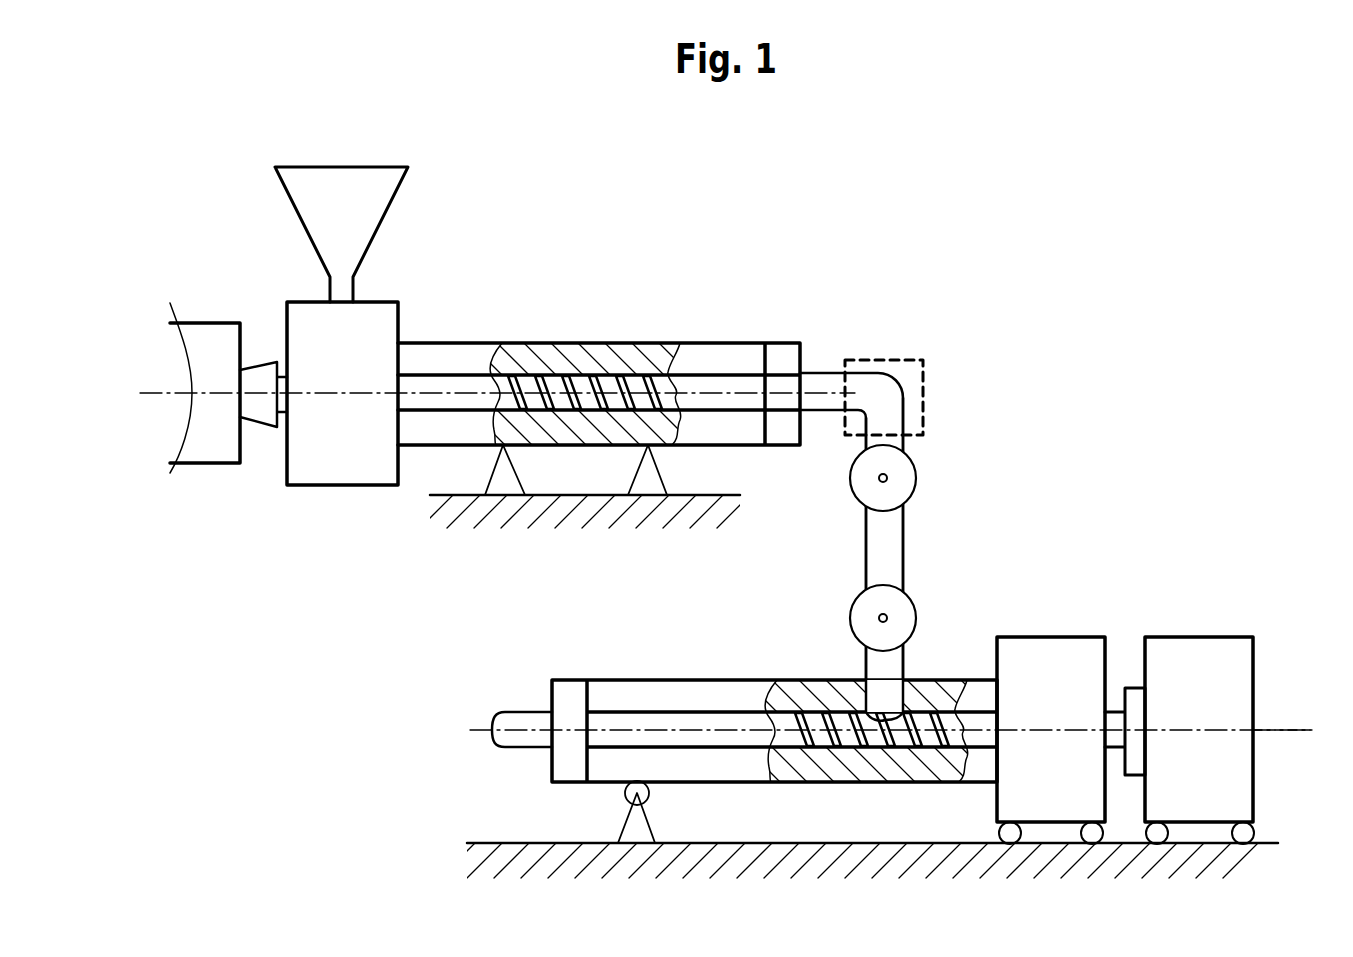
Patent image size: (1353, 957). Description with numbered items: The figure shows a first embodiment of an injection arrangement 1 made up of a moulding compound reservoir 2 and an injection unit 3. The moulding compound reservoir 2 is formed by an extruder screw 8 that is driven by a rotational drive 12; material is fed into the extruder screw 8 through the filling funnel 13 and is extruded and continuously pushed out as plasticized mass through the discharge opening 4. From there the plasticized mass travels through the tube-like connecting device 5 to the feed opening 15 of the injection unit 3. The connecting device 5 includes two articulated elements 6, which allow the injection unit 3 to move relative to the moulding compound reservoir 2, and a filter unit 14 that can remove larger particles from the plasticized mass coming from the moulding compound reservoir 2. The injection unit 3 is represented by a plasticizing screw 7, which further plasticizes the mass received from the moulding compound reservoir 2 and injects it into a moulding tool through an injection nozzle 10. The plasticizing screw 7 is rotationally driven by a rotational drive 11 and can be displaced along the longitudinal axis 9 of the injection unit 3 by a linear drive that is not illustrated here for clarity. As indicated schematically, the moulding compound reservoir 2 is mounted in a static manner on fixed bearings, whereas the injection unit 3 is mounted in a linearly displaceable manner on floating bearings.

The injection arrangement 1 is at (1149, 184).
The moulding compound reservoir 2 is at (600, 219).
The injection unit 3 is at (1149, 566).
The discharge opening 4 is at (812, 372).
The connecting device 5 is at (982, 448).
The articulated elements 6 is at (900, 617).
The plasticizing screw 7 is at (822, 717).
The extruder screw 8 is at (628, 380).
The longitudinal axis 9 is at (1283, 728).
The injection nozzle 10 is at (515, 718).
The rotational drive 11 is at (1222, 704).
The rotational drive 12 is at (208, 447).
The filling funnel 13 is at (328, 184).
The filter unit 14 is at (923, 362).
The feed opening 15 is at (893, 693).